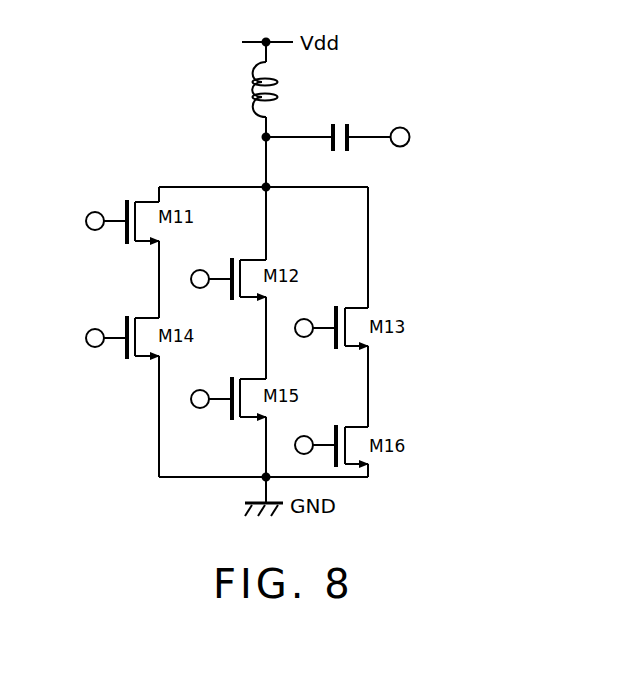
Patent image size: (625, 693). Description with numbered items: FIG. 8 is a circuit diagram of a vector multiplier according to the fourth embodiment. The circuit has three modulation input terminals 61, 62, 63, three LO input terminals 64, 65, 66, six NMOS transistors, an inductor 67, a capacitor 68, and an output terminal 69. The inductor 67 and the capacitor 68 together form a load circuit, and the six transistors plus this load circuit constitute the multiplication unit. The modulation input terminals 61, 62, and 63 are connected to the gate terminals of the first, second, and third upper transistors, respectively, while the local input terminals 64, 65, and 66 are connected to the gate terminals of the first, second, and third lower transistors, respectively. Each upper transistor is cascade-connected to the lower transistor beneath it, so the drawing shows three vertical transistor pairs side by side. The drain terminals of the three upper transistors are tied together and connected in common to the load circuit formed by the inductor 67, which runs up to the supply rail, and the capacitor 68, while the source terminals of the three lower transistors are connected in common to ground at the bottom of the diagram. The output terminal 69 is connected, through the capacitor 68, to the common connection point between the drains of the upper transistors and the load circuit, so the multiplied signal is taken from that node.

The modulation input terminal 61 is at (95, 230).
The modulation input terminal 62 is at (206, 270).
The modulation input terminal 63 is at (308, 319).
The LO input terminal 64 is at (95, 347).
The LO input terminal 65 is at (206, 390).
The LO input terminal 66 is at (308, 436).
The inductor 67 is at (279, 87).
The capacitor 68 is at (346, 118).
The output terminal 69 is at (410, 137).